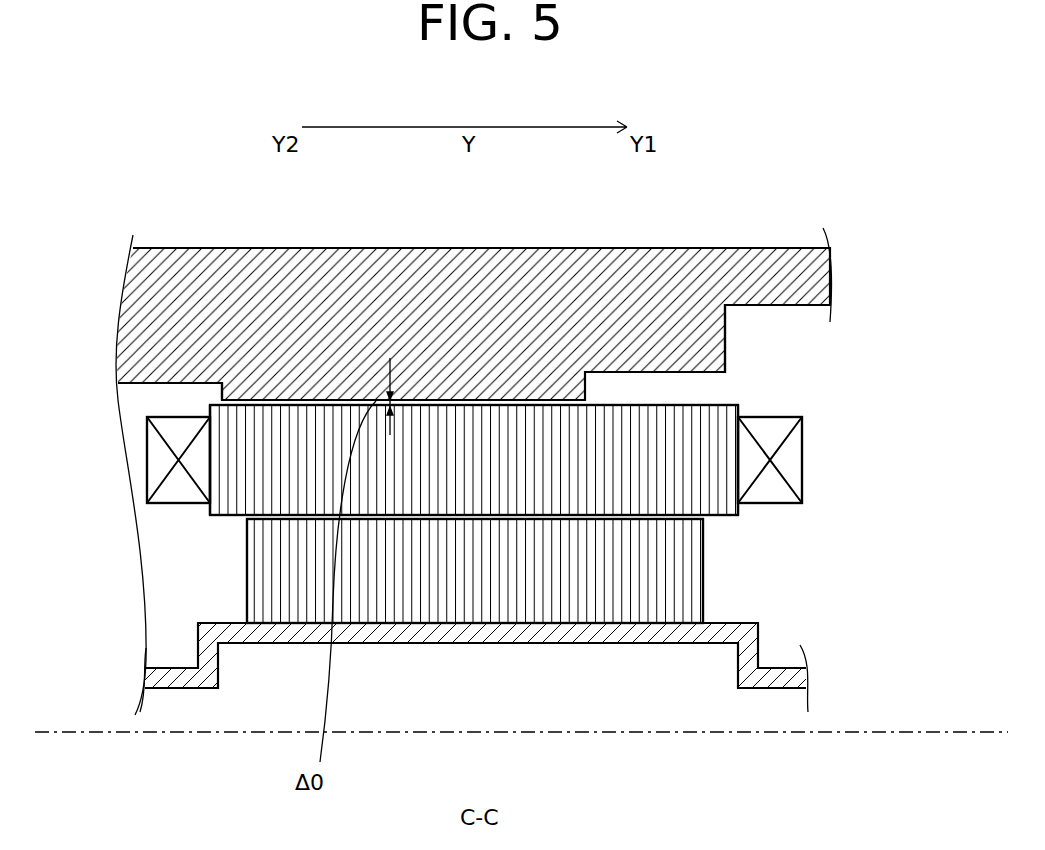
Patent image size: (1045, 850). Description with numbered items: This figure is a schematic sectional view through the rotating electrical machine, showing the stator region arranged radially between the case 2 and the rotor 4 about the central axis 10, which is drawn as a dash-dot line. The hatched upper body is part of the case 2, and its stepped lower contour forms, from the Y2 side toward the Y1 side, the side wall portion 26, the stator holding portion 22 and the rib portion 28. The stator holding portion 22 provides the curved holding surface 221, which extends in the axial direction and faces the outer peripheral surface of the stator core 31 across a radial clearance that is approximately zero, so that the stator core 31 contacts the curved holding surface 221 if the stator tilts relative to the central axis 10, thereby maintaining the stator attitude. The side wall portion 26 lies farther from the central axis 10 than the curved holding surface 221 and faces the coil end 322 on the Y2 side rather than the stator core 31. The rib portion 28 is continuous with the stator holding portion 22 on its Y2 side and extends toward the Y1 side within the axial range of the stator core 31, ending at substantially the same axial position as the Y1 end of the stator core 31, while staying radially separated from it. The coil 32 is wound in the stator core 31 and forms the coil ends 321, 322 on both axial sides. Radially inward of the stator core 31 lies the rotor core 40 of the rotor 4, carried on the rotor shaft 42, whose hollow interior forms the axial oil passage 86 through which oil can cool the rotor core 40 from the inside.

The case 2 is at (380, 272).
The side wall portion 26 is at (140, 388).
The rib portion 28 is at (698, 325).
The curved holding surface 221 is at (487, 400).
The stator holding portion 22 is at (474, 355).
The stator core 31 is at (645, 480).
The coil end 321 is at (802, 462).
The coil end 322 is at (172, 493).
The coil 32 is at (508, 506).
The rotor core 40 is at (703, 567).
The rotor shaft 42 is at (545, 632).
The rotor 4 is at (518, 651).
The axial oil passage 86 is at (486, 688).
The central axis 10 is at (855, 732).